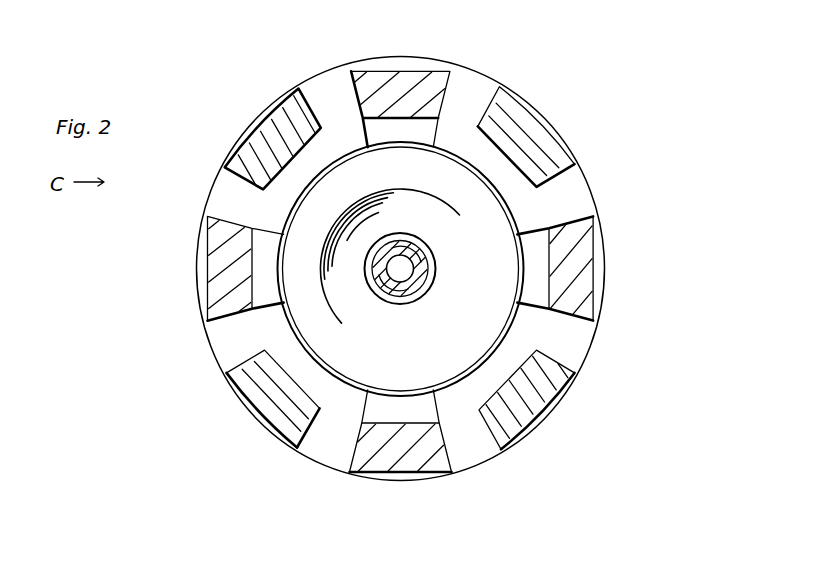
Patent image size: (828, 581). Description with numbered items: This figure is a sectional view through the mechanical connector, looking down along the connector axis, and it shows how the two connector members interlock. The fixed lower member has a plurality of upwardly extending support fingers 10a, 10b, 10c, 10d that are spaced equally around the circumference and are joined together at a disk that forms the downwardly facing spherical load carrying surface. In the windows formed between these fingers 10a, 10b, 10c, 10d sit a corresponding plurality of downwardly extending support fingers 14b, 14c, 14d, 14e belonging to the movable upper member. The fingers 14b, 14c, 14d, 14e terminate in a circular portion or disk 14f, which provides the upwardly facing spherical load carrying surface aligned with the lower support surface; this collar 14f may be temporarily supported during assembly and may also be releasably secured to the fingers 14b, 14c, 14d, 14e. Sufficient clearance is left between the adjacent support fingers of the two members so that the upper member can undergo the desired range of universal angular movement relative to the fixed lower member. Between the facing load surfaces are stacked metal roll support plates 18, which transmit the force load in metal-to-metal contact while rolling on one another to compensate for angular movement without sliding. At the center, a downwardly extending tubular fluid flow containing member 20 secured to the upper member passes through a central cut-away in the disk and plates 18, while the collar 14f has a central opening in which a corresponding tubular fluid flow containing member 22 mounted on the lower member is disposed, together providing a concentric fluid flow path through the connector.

The upwardly extending support finger 10a is at (261, 122).
The upwardly extending support finger 10b is at (518, 110).
The upwardly extending support finger 10c is at (537, 412).
The upwardly extending support finger 10d is at (250, 397).
The downwardly extending support finger 14b is at (212, 259).
The downwardly extending support finger 14c is at (402, 75).
The downwardly extending support finger 14d is at (590, 270).
The downwardly extending support finger 14e is at (356, 466).
The circular portion or disk (collar) 14f is at (266, 313).
The roll support plate 18 is at (440, 153).
The tubular fluid flow containing member 20 is at (423, 272).
The tubular fluid flow containing member 22 is at (413, 253).